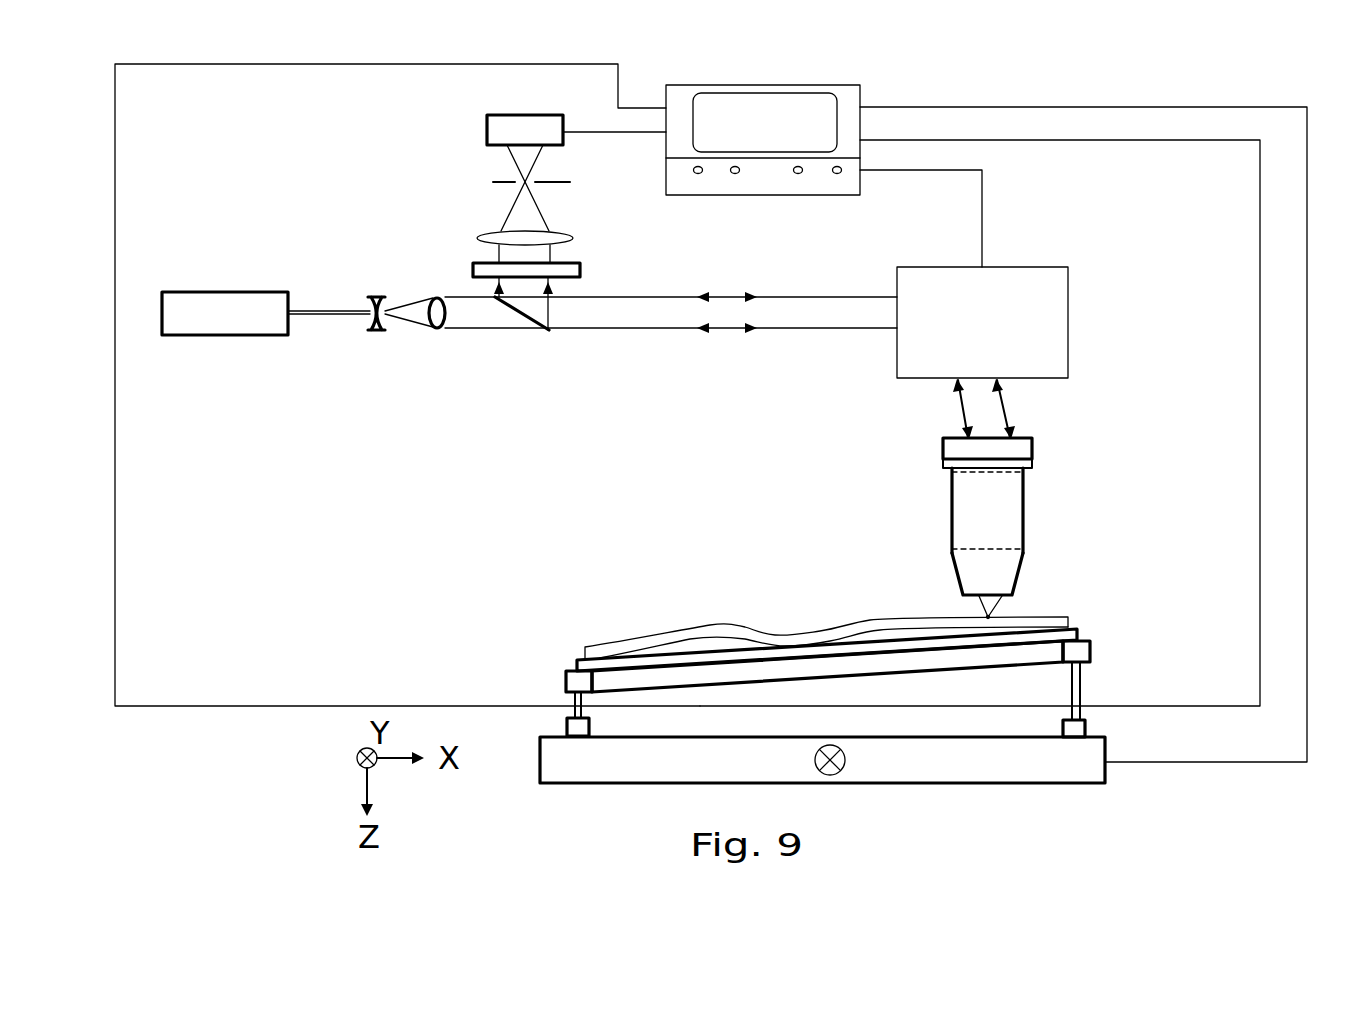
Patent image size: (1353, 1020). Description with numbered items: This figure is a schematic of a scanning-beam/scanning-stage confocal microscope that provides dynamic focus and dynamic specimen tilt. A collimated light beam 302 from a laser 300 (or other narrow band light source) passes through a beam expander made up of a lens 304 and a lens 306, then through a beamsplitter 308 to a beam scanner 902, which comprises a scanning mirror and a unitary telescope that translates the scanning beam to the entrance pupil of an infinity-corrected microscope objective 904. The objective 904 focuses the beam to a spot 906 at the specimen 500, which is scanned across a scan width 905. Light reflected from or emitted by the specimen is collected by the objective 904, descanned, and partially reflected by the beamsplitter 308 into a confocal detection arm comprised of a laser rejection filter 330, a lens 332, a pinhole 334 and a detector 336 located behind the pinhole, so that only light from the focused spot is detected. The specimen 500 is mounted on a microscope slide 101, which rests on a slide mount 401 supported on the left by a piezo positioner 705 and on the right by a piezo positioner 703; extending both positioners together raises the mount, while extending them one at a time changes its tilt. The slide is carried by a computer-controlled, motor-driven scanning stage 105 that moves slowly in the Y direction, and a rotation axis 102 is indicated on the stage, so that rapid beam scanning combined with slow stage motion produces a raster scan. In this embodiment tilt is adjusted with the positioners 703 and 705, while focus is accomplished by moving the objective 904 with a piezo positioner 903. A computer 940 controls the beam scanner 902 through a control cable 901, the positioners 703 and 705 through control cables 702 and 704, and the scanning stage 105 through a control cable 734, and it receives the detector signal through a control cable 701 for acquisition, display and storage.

The microscope slide 101 is at (1080, 636).
The rotation axis 102 is at (830, 775).
The scanning stage 105 is at (1063, 785).
The laser 300 is at (200, 292).
The collimated light beam 302 is at (322, 304).
The lens 304 is at (368, 331).
The lens 306 is at (433, 330).
The beamsplitter 308 is at (547, 332).
The laser rejection filter 330 is at (473, 268).
The lens 332 is at (478, 235).
The pinhole 334 is at (493, 182).
The detector 336 is at (487, 125).
The slide mount 401 is at (1090, 652).
The specimen 500 is at (1053, 618).
The control cable 701 is at (578, 133).
The control cable 702 is at (1097, 140).
The piezo positioner 703 is at (1086, 728).
The control cable 704 is at (115, 620).
The piezo positioner 705 is at (565, 730).
The control cable 734 is at (957, 107).
The control cable 901 is at (982, 192).
The beam scanner 902 is at (1068, 322).
The piezo positioner 903 is at (1032, 455).
The infinity-corrected microscope objective 904 is at (1023, 533).
The scan width 905 is at (1003, 618).
The spot 906 is at (982, 617).
The computer 940 is at (735, 195).